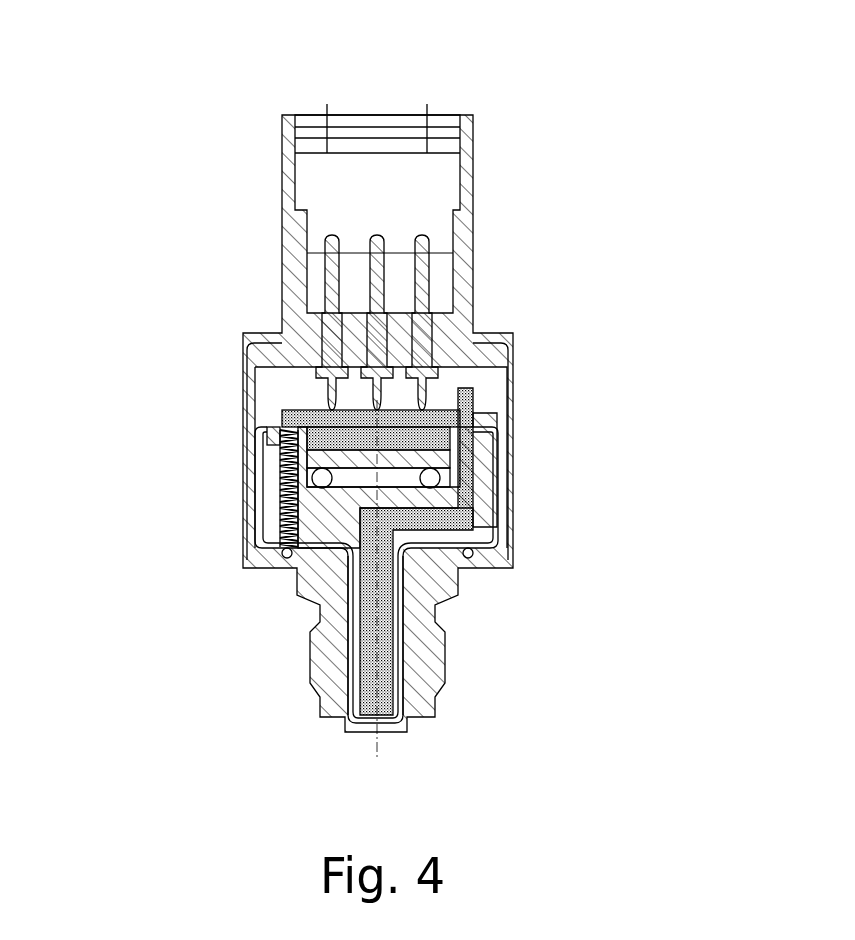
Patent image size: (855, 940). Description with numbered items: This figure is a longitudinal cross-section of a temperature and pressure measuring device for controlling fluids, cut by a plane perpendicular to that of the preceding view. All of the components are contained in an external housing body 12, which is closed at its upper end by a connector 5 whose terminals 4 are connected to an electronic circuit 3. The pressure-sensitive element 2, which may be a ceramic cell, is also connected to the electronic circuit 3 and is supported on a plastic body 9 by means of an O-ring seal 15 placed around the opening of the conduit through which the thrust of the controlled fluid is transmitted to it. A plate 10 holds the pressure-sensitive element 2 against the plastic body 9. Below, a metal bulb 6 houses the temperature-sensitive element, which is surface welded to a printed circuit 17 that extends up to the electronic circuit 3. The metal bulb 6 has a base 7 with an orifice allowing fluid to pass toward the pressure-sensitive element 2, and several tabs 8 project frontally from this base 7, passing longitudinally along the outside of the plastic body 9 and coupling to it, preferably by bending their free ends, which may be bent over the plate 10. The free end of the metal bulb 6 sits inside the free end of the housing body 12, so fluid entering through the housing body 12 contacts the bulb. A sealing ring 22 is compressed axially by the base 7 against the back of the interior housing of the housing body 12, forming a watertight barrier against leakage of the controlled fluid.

The pressure-sensitive element 2 is at (320, 457).
The electronic circuit 3 is at (286, 415).
The terminals 4 is at (331, 263).
The connector 5 is at (288, 188).
The metal bulb 6 is at (348, 682).
The base 7 is at (492, 543).
The tabs 8 is at (493, 493).
The plastic body 9 is at (317, 523).
The plate 10 is at (318, 437).
The housing body 12 is at (428, 668).
The O-ring seal 15 is at (430, 470).
The printed circuit 17 is at (370, 645).
The sealing ring 22 is at (285, 553).